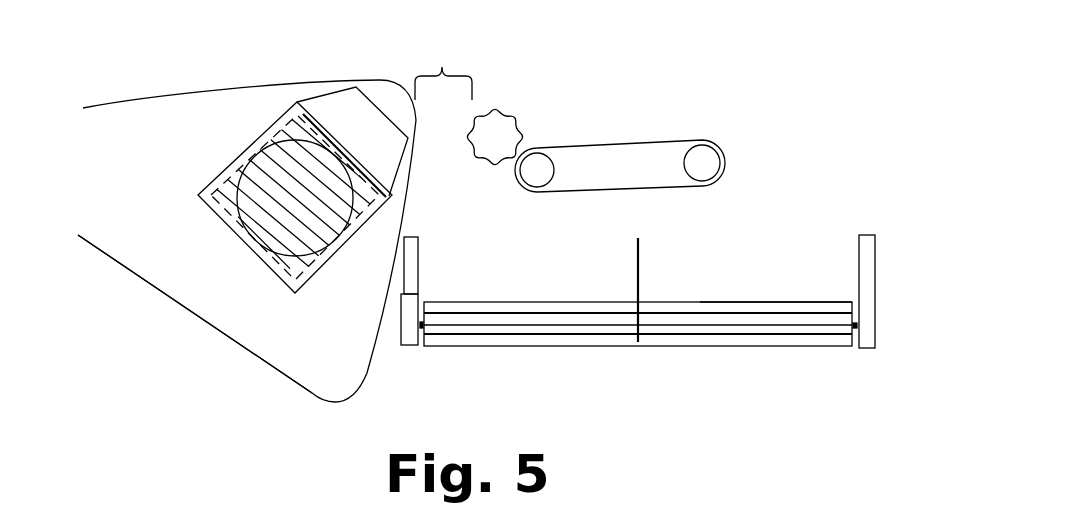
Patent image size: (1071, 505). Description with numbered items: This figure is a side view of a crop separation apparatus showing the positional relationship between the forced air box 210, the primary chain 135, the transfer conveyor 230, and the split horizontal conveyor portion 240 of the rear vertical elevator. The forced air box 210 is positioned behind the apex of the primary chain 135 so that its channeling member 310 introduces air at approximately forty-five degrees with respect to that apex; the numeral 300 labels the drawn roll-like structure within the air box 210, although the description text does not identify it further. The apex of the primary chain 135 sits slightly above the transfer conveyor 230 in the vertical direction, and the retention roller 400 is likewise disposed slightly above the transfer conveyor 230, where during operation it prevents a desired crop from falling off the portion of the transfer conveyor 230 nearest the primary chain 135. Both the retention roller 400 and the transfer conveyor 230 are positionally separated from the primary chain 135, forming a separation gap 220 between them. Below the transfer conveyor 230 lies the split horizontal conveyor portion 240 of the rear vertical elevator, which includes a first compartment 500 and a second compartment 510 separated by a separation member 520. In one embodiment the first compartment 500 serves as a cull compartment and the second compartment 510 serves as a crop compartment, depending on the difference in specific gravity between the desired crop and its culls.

The primary chain 135 is at (180, 88).
The forced air box 210 is at (263, 328).
The separation gap 220 is at (443, 63).
The transfer conveyor 230 is at (670, 142).
The split horizontal conveyor portion 240 is at (633, 384).
The roll of material 300 is at (243, 168).
The channeling member 310 is at (340, 98).
The retention roller 400 is at (497, 137).
The first compartment 500 is at (528, 272).
The second compartment 510 is at (790, 282).
The separation member 520 is at (638, 250).